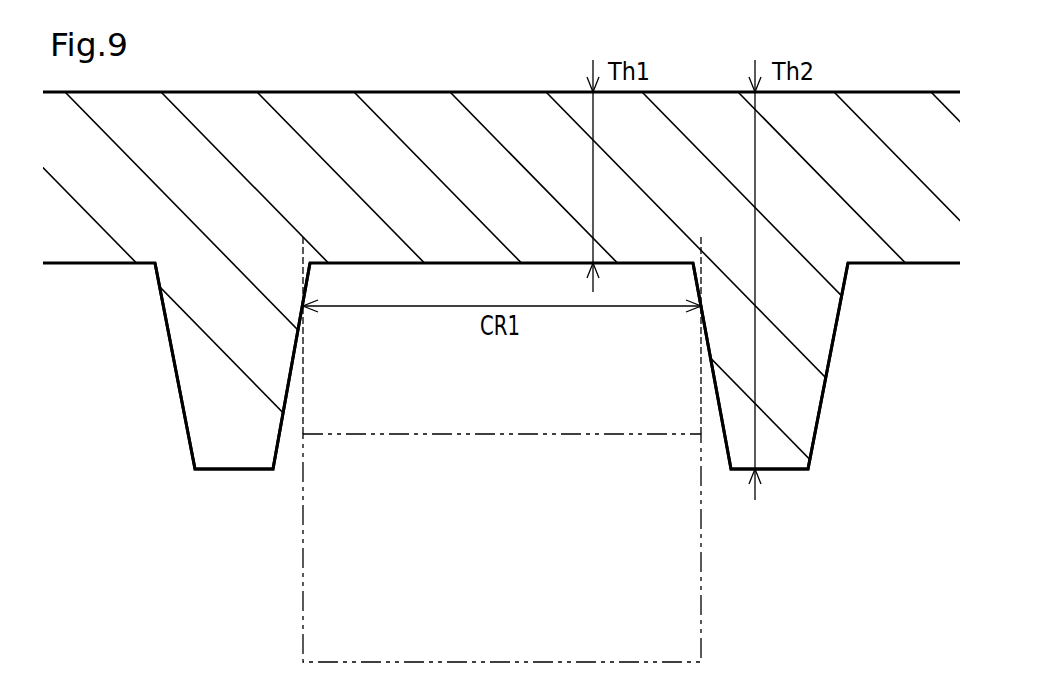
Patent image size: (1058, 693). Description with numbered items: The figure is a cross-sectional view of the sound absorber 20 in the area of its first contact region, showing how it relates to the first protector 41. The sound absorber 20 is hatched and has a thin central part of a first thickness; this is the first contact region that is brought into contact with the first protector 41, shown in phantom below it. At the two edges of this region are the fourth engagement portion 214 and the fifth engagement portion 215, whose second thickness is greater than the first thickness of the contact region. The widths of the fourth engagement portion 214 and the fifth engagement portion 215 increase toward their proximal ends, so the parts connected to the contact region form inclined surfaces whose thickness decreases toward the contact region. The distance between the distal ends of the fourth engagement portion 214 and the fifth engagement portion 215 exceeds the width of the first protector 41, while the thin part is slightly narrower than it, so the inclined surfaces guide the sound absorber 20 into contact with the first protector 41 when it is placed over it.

The sound absorber 20 is at (400, 91).
The fourth engagement portion 214 is at (175, 366).
The fifth engagement portion 215 is at (823, 399).
The first protector 41 is at (702, 603).